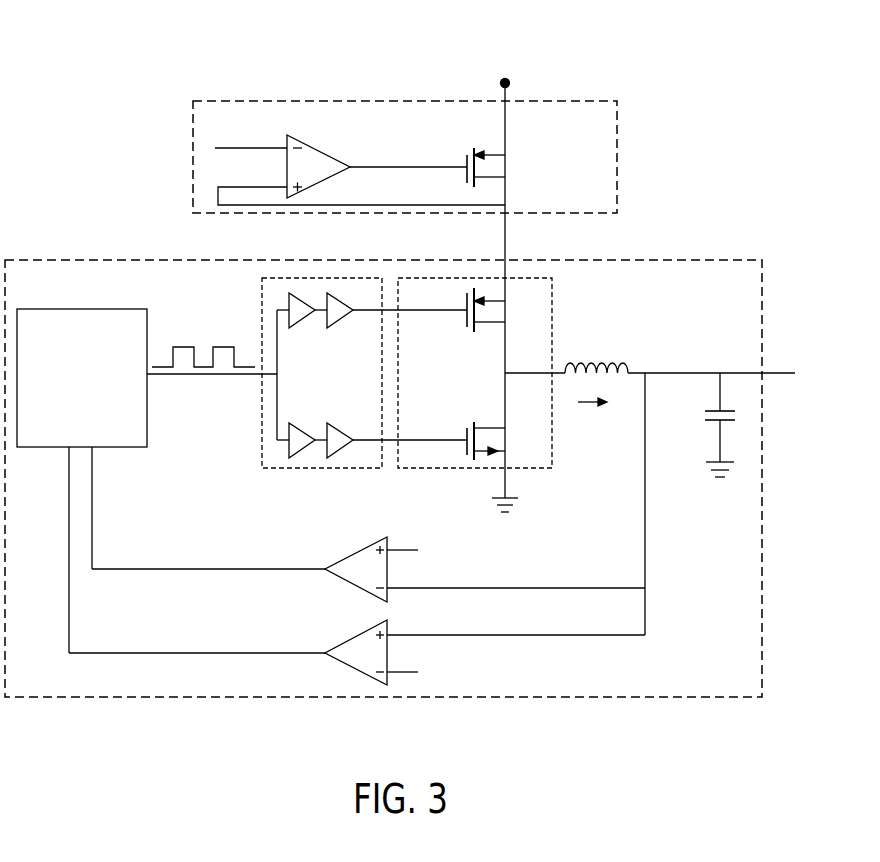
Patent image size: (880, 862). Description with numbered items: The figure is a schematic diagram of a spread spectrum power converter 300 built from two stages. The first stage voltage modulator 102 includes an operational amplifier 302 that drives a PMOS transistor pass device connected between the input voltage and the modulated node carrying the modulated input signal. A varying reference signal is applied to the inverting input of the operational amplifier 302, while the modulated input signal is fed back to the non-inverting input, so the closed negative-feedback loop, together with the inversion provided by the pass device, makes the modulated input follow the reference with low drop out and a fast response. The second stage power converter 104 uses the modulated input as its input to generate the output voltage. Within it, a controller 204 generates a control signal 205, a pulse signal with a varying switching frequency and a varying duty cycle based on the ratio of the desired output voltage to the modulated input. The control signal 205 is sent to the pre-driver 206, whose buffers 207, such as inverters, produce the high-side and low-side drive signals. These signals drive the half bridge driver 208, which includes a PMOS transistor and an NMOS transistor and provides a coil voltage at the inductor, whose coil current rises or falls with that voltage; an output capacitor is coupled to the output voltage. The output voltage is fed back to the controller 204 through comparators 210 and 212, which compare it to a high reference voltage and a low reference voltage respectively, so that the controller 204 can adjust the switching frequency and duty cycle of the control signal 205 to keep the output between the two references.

The spread spectrum power converter 300 is at (92, 62).
The first stage voltage modulator 102 is at (578, 100).
The operational amplifier 302 is at (313, 146).
The second stage power converter 104 is at (700, 258).
The controller 204 is at (82, 378).
The control signal 205 is at (202, 376).
The pre-driver 206 is at (261, 300).
The buffers 207 is at (295, 327).
The half bridge driver 208 is at (552, 318).
The comparator 210 is at (341, 582).
The comparator 212 is at (336, 663).